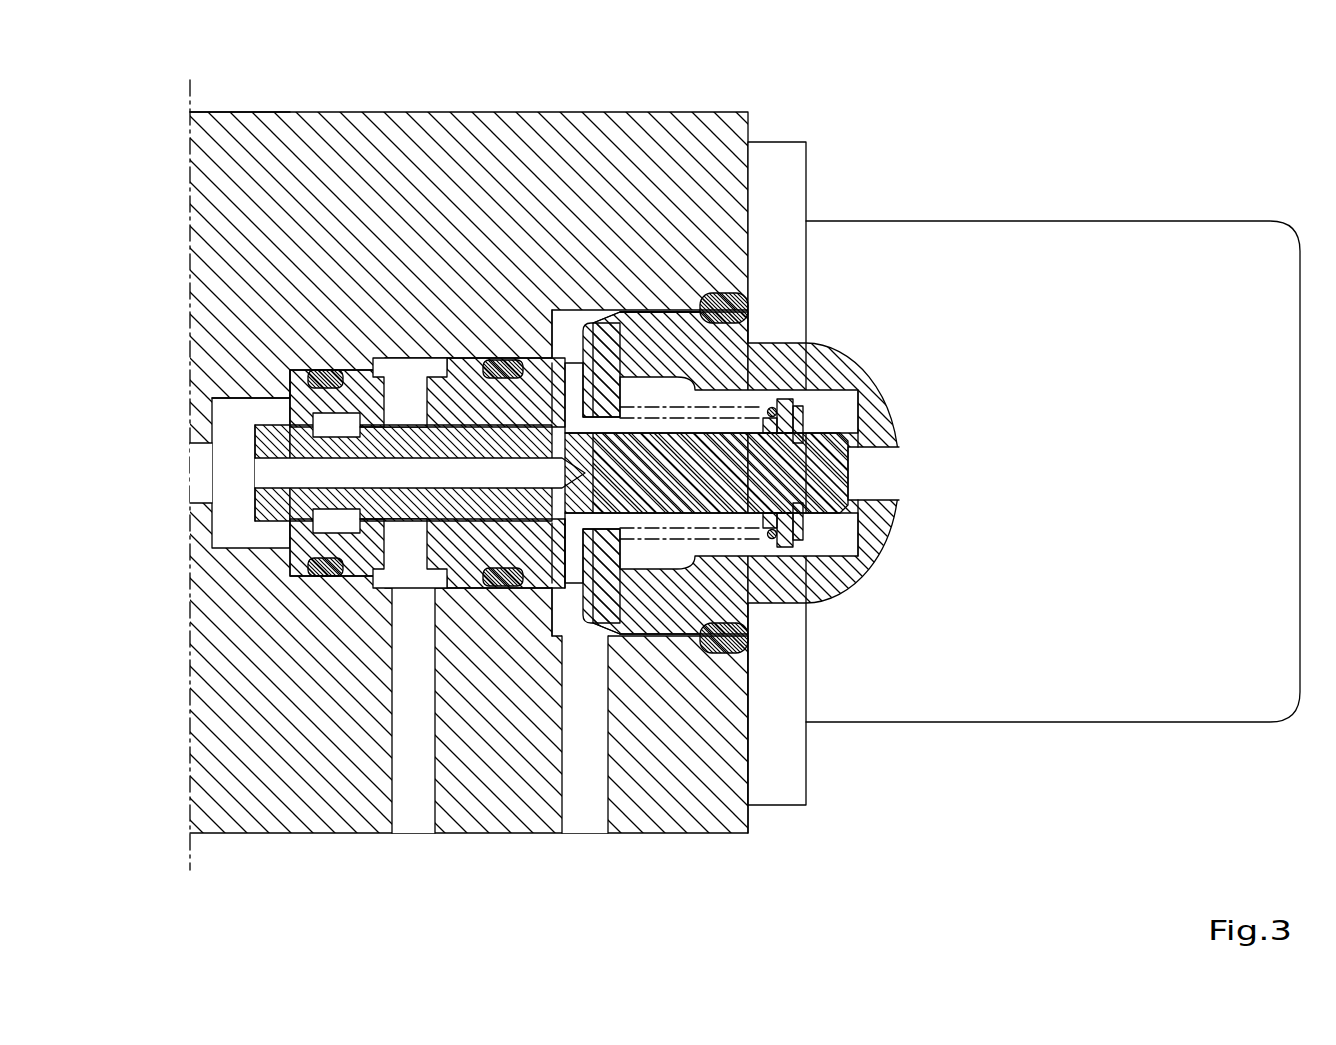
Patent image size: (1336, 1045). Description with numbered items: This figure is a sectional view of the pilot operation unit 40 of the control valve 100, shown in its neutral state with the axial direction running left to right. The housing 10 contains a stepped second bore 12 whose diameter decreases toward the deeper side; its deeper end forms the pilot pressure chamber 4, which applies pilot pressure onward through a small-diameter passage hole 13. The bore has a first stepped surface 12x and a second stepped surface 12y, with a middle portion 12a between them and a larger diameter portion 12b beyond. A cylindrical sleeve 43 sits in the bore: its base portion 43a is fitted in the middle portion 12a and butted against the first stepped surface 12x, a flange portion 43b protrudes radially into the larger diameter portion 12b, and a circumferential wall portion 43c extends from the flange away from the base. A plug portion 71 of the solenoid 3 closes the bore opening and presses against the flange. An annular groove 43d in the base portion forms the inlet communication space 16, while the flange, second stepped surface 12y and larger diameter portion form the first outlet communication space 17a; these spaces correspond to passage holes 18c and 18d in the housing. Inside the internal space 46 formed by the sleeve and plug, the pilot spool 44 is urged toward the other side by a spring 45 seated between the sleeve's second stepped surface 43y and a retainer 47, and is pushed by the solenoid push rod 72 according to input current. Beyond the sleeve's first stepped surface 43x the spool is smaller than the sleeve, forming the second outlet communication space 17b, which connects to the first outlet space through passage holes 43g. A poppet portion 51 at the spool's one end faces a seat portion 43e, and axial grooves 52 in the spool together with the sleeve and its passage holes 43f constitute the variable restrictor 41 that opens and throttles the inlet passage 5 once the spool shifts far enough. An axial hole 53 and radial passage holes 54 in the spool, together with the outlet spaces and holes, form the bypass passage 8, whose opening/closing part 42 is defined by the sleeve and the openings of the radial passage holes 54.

The control valve 100 is at (1283, 190).
The solenoid 3 is at (1020, 235).
The pilot pressure chamber 4 is at (273, 393).
The inlet passage 5 is at (225, 222).
The bypass passage 8 is at (290, 366).
The housing 10 is at (244, 132).
The second bore 12 is at (230, 532).
The first stepped surface 12x is at (263, 268).
The second stepped surface 12y is at (557, 322).
The middle portion 12a is at (530, 593).
The larger diameter portion 12b is at (752, 700).
The passage hole 13 is at (200, 462).
The inlet communication space 16 is at (397, 387).
The first outlet communication space 17a is at (578, 323).
The second outlet communication space 17b is at (772, 397).
The passage hole 18c is at (413, 820).
The passage hole 18d is at (582, 818).
The pilot operation unit 40 is at (748, 217).
The variable restrictor 41 is at (395, 548).
The opening/closing part 42 is at (557, 410).
The sleeve 43 is at (350, 560).
The base portion 43a is at (470, 590).
The flange portion 43b is at (608, 323).
The circumferential wall portion 43c is at (723, 280).
The annular groove 43d is at (447, 373).
The seat portion 43e is at (335, 535).
The passage holes 43f is at (380, 393).
The passage holes 43g is at (577, 560).
The first stepped surface 43x is at (612, 600).
The second stepped surface 43y is at (660, 600).
The pilot spool 44 is at (863, 423).
The spring 45 is at (810, 525).
The internal space 46 is at (850, 403).
The retainer 47 is at (778, 530).
The poppet portion 51 is at (255, 505).
The grooves 52 is at (383, 567).
The axial hole 53 is at (272, 477).
The radial passage holes 54 is at (750, 630).
The plug portion 71 is at (818, 398).
The push rod 72 is at (888, 475).